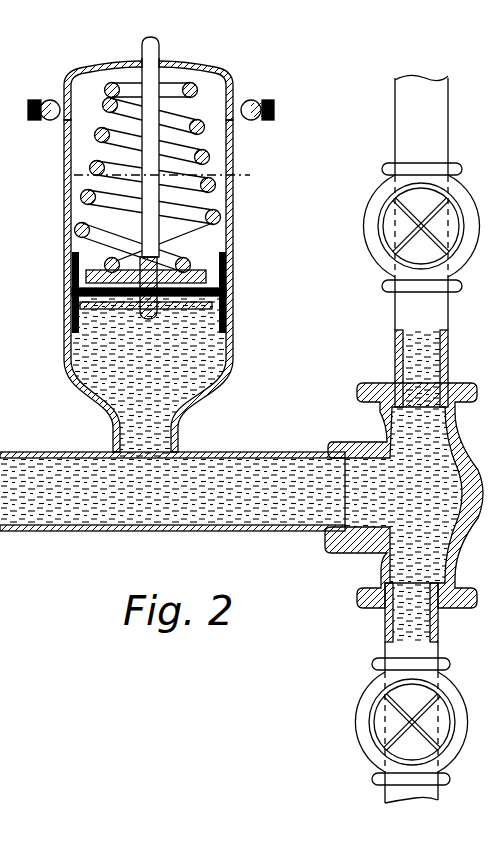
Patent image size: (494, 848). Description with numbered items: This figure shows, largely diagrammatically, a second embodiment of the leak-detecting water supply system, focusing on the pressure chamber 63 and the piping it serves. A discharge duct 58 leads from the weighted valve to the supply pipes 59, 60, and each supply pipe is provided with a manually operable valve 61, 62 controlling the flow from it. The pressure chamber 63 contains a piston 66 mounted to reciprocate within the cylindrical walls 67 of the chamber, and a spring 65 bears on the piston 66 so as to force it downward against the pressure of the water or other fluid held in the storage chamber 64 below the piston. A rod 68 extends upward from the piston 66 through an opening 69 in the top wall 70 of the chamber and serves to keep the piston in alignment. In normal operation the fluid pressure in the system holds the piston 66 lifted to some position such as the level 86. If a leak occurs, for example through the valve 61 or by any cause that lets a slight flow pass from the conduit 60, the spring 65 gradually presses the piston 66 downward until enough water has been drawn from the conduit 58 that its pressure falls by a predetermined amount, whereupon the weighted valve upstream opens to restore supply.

The discharge duct 58 is at (250, 485).
The supply pipe 59 is at (387, 628).
The supply pipe 60 is at (395, 360).
The manually operable valve 61 is at (372, 236).
The manually operable valve 62 is at (358, 722).
The pressure chamber 63 is at (205, 143).
The storage chamber 64 is at (100, 343).
The spring 65 is at (73, 230).
The piston 66 is at (138, 318).
The cylindrical walls 67 is at (155, 257).
The rod 68 is at (156, 47).
The opening 69 is at (165, 62).
The top wall 70 is at (112, 67).
The level 86 is at (72, 174).